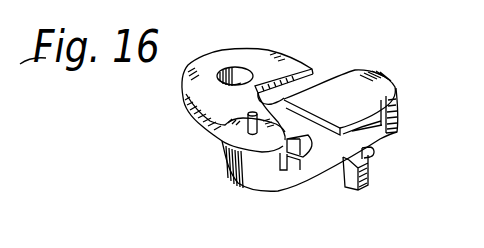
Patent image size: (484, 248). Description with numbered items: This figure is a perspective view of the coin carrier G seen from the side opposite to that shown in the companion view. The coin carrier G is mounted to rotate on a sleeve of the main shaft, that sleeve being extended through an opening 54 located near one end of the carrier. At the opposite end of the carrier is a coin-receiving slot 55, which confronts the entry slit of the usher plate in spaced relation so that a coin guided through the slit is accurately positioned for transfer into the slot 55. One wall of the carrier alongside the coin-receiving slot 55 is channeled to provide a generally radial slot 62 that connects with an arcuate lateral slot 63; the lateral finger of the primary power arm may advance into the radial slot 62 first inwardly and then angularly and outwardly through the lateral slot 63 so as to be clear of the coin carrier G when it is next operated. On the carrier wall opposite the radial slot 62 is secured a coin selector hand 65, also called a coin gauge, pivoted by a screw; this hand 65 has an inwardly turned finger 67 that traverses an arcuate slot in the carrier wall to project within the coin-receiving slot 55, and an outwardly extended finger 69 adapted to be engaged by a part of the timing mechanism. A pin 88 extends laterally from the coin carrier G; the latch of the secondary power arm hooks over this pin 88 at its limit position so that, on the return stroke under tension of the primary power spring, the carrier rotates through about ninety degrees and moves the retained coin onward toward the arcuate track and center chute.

The pin 88 is at (225, 125).
The opening 54 is at (235, 67).
The radial slot 62 is at (266, 103).
The arcuate lateral slot 63 is at (322, 74).
The coin carrier G is at (371, 71).
The coin-receiving slot 55 is at (379, 131).
The inwardly turned finger 67 is at (300, 157).
The coin selector hand 65 is at (372, 151).
The outwardly extended finger 69 is at (368, 177).